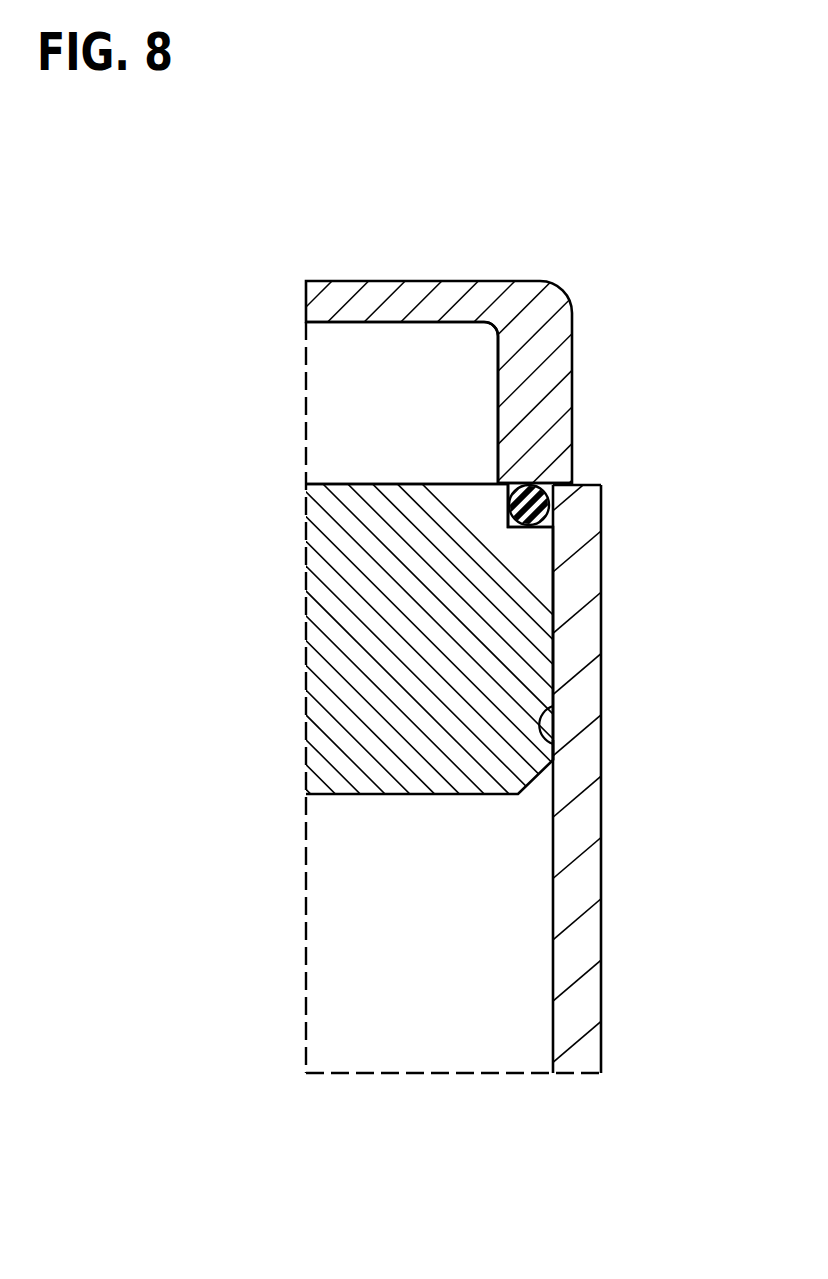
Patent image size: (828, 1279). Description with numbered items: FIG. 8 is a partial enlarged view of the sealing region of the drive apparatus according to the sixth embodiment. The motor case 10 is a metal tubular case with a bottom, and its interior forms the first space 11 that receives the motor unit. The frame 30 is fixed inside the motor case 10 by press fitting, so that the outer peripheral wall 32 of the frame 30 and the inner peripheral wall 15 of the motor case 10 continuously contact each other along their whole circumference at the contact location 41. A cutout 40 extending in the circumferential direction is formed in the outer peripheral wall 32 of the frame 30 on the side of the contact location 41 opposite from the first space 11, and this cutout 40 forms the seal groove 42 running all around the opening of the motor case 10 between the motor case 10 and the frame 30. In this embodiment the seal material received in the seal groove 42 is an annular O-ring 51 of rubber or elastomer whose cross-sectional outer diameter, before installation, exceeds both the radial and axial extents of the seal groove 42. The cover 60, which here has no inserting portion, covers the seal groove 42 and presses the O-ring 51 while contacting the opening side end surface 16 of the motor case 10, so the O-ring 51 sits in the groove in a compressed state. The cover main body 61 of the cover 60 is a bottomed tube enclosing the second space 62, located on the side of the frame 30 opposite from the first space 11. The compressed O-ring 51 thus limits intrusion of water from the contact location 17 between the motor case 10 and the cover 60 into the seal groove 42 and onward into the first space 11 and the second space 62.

The motor case 10 is at (576, 902).
The first space 11 is at (428, 946).
The inner peripheral wall 15 is at (535, 741).
The opening side end surface 16 is at (573, 481).
The contact location 17 is at (576, 482).
The frame 30 is at (365, 677).
The outer peripheral wall 32 is at (553, 697).
The cutout 40 is at (512, 519).
The contact location 41 is at (556, 650).
The seal groove 42 is at (553, 518).
The O-ring 51 is at (535, 505).
The cover 60 is at (405, 280).
The cover main body 61 is at (552, 334).
The second space 62 is at (425, 410).